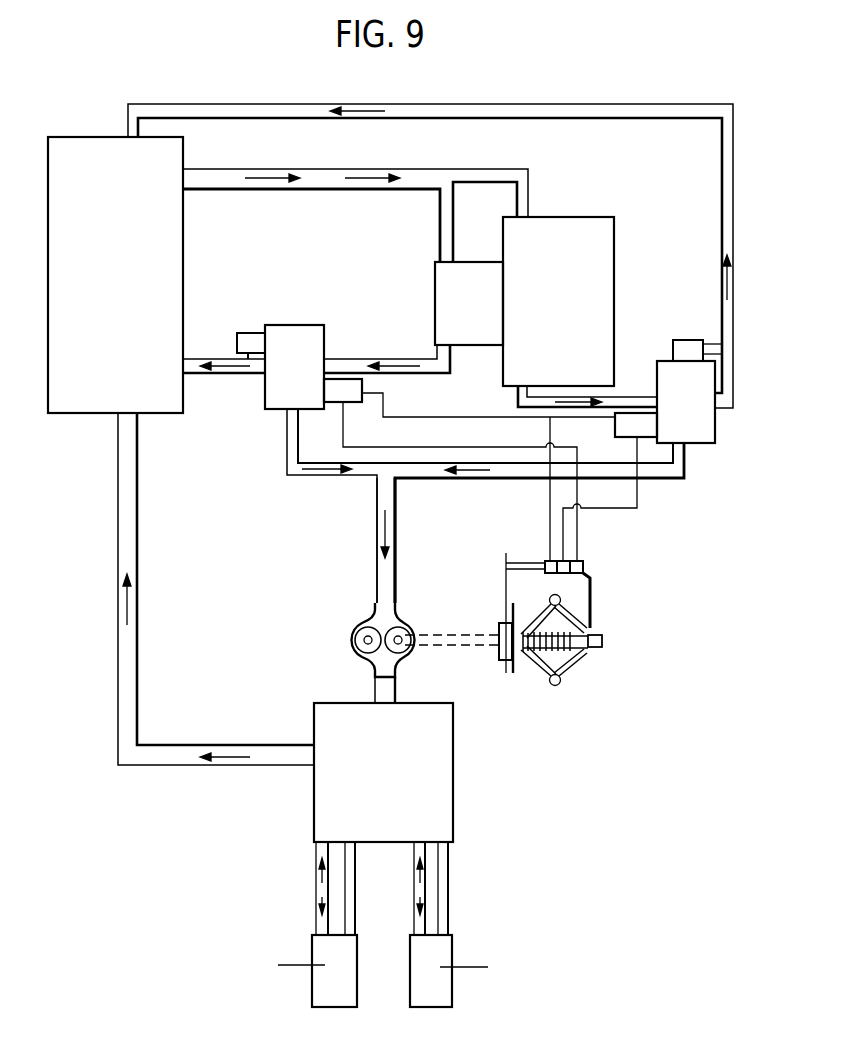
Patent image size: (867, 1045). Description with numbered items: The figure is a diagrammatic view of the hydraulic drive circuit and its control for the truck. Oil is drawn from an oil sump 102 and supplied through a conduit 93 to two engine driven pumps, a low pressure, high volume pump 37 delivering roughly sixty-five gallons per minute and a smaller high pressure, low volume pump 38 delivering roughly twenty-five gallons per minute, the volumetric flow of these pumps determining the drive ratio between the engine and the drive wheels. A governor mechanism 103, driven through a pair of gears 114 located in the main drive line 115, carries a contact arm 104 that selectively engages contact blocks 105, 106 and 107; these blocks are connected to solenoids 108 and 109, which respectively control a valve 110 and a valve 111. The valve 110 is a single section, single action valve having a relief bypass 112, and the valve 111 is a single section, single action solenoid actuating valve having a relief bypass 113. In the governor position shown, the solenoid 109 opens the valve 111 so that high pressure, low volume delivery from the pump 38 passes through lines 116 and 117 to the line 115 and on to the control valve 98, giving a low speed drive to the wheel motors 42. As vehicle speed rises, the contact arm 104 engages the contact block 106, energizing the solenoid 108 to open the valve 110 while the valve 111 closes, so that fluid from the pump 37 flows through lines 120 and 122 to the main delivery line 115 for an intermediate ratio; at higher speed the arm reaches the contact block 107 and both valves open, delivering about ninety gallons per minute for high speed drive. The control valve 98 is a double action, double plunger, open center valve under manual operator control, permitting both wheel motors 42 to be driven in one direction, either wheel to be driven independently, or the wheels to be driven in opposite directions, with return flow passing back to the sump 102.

The pump 37 is at (583, 228).
The pump 38 is at (444, 278).
The wheel motors 42 is at (323, 993).
The supply line from sump 93 is at (315, 182).
The control valve 98 is at (322, 817).
The oil sump 102 is at (85, 400).
The governor mechanism 103 is at (535, 667).
The contact arm 104 is at (592, 593).
The contact block 105 is at (580, 569).
The contact block 106 is at (566, 561).
The contact block 107 is at (548, 561).
The solenoid 108 is at (627, 425).
The solenoid 109 is at (347, 393).
The valve 110 is at (698, 436).
The valve 111 is at (278, 392).
The relief bypass 112 is at (686, 340).
The relief bypass 113 is at (253, 333).
The pair of gears 114 is at (397, 653).
The main drive line 115 is at (388, 568).
The line 116 is at (354, 365).
The line 117 is at (297, 472).
The line 120 is at (518, 398).
The line 122 is at (519, 470).